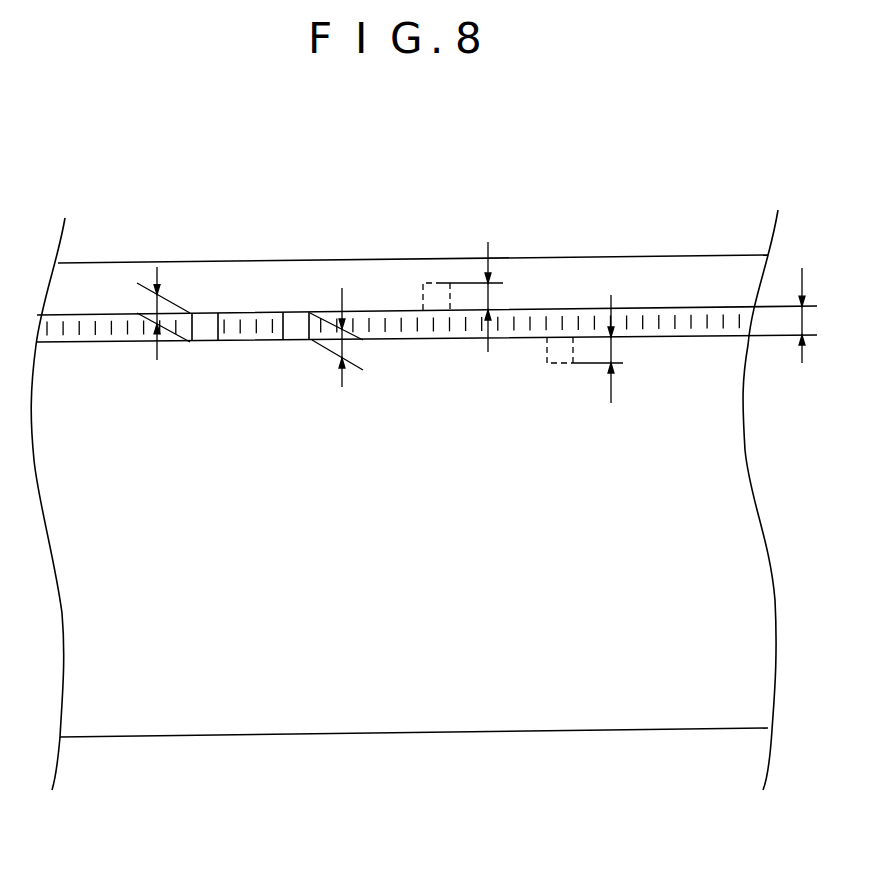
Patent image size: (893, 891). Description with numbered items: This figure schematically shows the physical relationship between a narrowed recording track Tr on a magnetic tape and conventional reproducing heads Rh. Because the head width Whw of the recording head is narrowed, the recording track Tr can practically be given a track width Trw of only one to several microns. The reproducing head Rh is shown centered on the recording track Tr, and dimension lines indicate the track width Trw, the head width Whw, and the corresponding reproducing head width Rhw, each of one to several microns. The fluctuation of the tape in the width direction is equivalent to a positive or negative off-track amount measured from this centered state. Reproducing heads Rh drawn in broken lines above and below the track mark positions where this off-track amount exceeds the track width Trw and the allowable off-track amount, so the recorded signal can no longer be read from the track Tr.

The recording track Tr is at (392, 311).
The reproducing head Rh is at (297, 334).
The head width Whw is at (153, 307).
The read head width (one to several microns) Rhw is at (336, 347).
The track width Trw is at (783, 335).